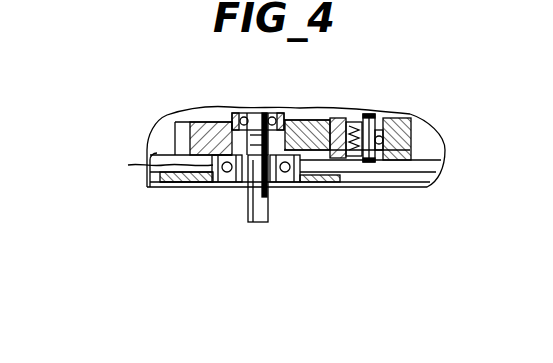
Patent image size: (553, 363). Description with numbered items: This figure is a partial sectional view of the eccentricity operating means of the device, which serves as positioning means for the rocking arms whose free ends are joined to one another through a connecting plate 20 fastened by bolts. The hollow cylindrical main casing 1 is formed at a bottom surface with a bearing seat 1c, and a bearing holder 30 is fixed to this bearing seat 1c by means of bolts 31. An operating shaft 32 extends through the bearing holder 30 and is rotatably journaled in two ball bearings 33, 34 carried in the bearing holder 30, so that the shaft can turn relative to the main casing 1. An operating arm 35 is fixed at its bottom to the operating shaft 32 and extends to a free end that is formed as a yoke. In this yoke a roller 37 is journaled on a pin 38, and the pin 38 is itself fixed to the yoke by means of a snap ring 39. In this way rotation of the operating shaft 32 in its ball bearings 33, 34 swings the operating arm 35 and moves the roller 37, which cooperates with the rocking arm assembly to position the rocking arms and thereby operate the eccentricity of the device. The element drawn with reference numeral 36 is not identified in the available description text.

The main casing 1 is at (165, 190).
The bearing seat 1c is at (201, 189).
The connecting plate 20 is at (433, 140).
The bearing holder 30 is at (147, 166).
The bolts 31 is at (287, 184).
The operating shaft 32 is at (256, 222).
The ball bearing 33 is at (233, 188).
The ball bearing 34 is at (272, 110).
The operating arm 35 is at (322, 110).
The pin 36 is at (376, 160).
The roller 37 is at (405, 158).
The pin 38 is at (364, 165).
The snap ring 39 is at (352, 162).